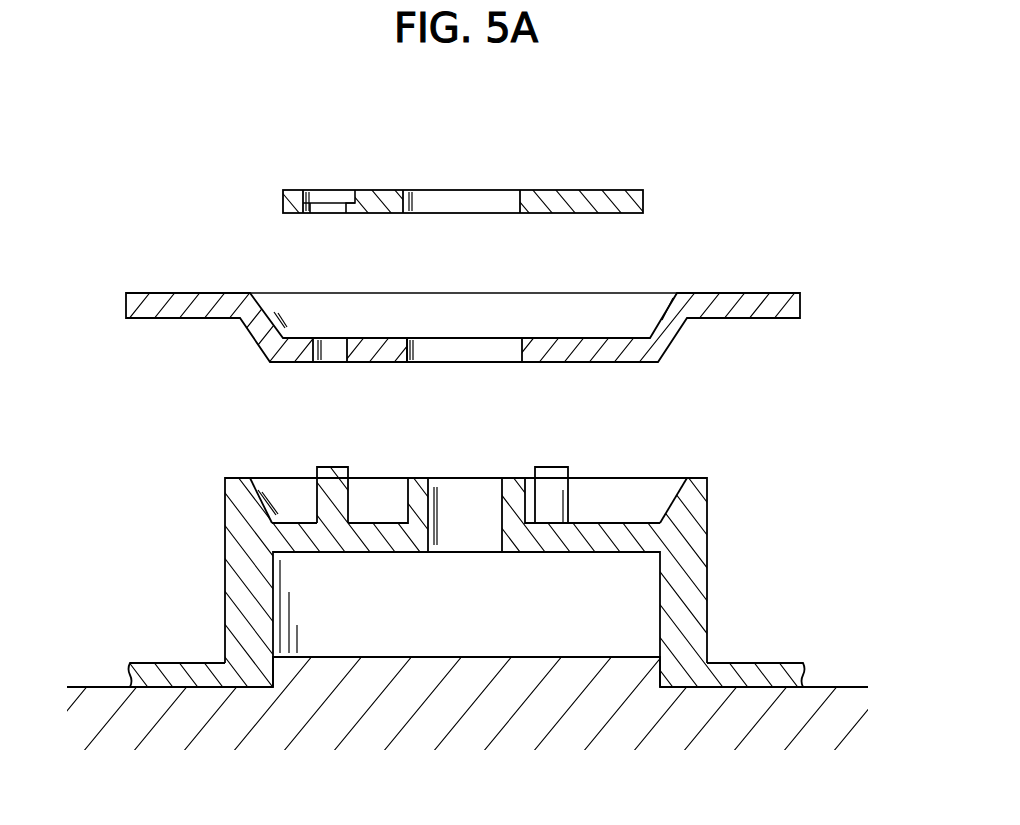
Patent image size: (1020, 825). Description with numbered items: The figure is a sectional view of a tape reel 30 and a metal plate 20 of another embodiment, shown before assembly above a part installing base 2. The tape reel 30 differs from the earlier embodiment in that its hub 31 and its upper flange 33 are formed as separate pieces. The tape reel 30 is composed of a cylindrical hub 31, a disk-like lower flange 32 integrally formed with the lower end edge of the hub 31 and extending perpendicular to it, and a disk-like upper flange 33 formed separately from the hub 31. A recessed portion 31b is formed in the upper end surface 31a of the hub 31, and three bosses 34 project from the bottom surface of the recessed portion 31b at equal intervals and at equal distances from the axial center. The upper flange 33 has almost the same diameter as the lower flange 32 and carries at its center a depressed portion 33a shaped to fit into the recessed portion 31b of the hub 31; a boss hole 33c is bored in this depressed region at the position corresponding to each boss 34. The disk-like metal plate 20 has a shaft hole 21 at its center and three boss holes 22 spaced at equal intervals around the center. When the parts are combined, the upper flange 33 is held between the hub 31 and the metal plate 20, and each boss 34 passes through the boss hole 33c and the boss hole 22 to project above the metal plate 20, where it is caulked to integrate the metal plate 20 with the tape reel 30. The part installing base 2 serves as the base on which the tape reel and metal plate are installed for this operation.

The part installing base 2 is at (835, 690).
The metal plate 20 is at (419, 152).
The shaft hole 21 is at (507, 190).
The boss hole 22 is at (330, 202).
The tape reel 30 is at (112, 413).
The hub 31 is at (462, 541).
The upper end surface 31a is at (265, 478).
The recessed portion 31b is at (652, 478).
The lower flange 32 is at (180, 665).
The upper flange 33 is at (423, 340).
The depressed portion 33a is at (530, 338).
The boss hole 33c is at (336, 347).
The boss 34 is at (330, 467).